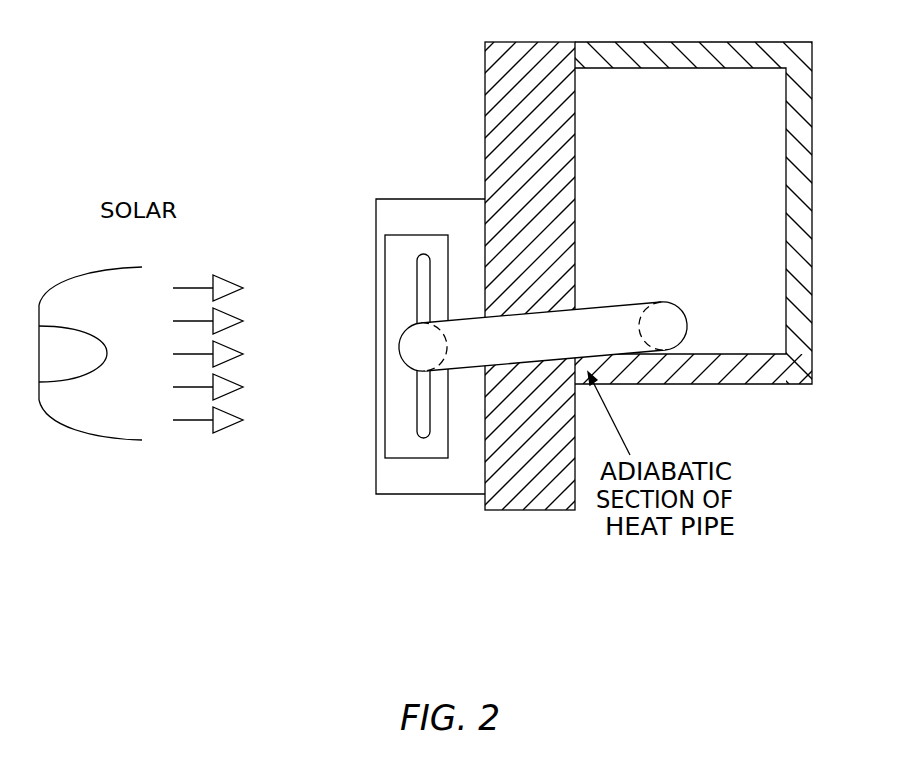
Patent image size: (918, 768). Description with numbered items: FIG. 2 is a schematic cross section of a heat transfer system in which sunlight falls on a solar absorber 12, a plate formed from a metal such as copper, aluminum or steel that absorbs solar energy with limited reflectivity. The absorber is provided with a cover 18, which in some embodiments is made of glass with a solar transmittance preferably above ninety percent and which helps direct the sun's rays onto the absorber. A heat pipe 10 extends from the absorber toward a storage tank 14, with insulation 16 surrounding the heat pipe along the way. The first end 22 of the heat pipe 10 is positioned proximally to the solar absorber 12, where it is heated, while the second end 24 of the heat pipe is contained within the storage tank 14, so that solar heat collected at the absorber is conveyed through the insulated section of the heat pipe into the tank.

The heat pipe 10 is at (587, 325).
The solar absorber 12 is at (422, 289).
The storage tank 14 is at (768, 102).
The insulation 16 is at (520, 119).
The cover 18 is at (385, 375).
The first end 22 is at (410, 355).
The second end 24 is at (665, 326).